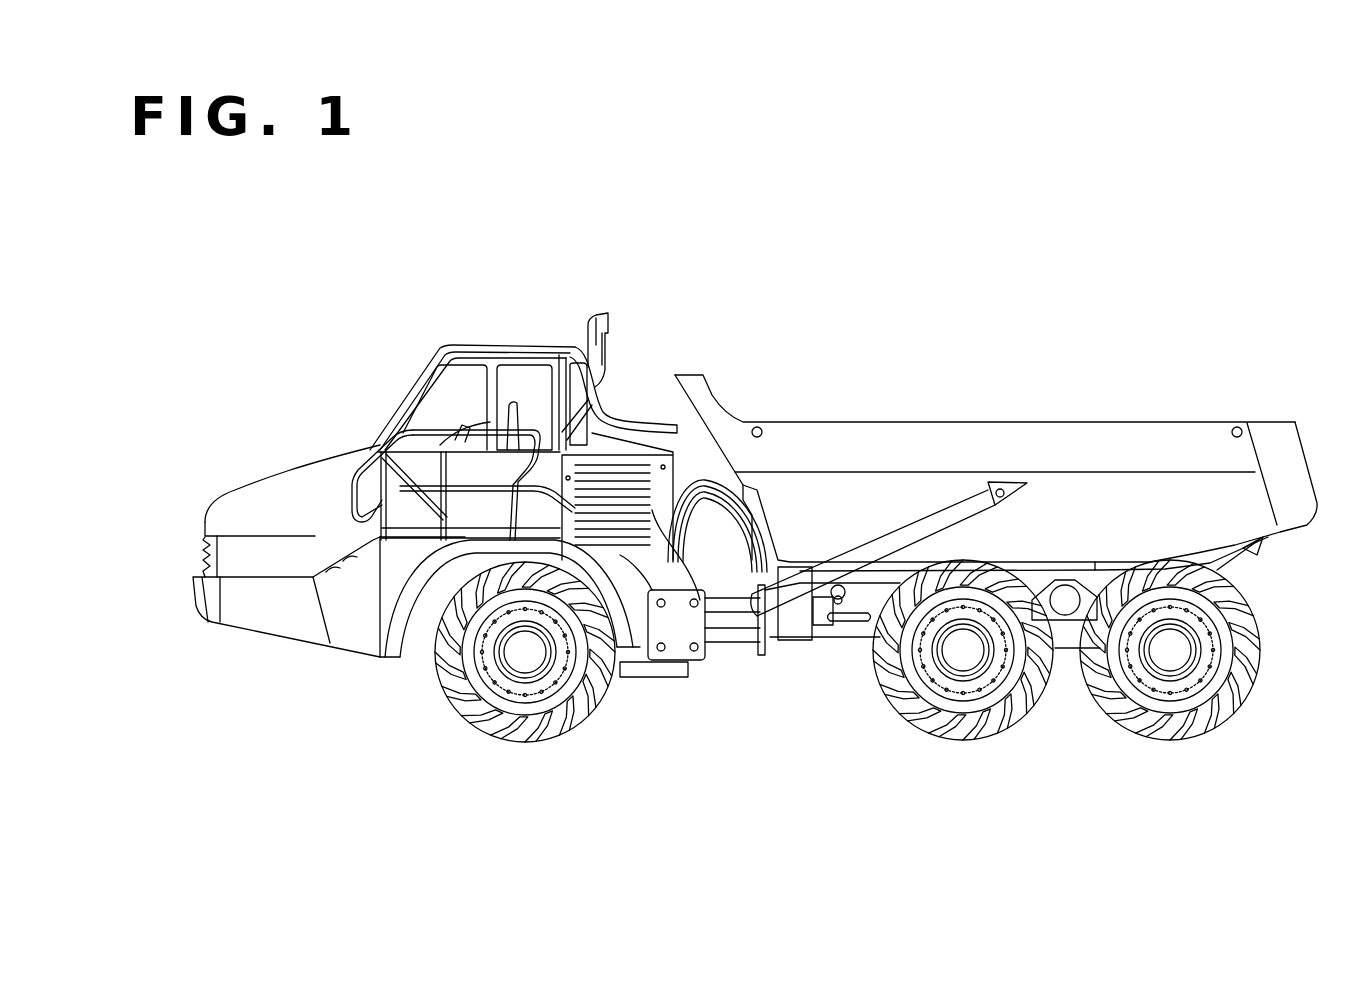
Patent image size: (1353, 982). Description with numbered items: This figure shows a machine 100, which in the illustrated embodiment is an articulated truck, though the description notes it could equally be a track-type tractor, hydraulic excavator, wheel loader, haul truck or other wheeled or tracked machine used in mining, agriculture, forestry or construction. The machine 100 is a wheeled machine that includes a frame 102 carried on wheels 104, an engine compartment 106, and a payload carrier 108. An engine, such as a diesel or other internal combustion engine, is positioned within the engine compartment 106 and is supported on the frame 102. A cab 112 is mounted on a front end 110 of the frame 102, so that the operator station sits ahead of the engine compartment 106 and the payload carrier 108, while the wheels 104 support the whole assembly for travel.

The machine 100 is at (1198, 342).
The frame 102 is at (367, 633).
The wheels 104 is at (580, 717).
The engine compartment 106 is at (260, 567).
The payload carrier 108 is at (1086, 532).
The front end 110 is at (191, 478).
The cab 112 is at (487, 345).